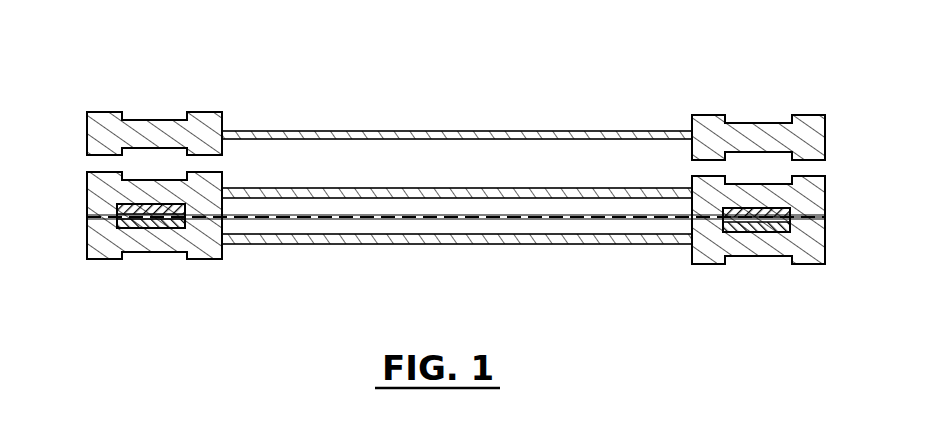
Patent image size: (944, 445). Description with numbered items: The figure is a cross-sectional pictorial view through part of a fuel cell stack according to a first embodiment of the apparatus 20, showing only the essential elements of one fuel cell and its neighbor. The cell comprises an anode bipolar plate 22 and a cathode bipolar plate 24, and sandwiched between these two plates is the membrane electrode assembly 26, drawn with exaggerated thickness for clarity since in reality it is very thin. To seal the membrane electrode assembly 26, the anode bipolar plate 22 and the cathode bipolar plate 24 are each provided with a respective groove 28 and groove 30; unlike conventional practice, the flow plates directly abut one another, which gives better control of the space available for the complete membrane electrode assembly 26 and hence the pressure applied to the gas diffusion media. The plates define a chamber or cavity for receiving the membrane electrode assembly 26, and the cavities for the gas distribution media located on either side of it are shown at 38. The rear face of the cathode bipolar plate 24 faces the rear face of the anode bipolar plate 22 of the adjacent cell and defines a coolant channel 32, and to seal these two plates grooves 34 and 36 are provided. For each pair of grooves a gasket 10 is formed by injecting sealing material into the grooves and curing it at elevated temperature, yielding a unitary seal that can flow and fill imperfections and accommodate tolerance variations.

The gasket 10 is at (172, 222).
The apparatus 20 is at (110, 281).
The anode bipolar plate 22 is at (160, 191).
The cathode bipolar plate 24 is at (88, 217).
The membrane electrode assembly 26 is at (825, 218).
The groove 28 is at (756, 232).
The groove 30 is at (762, 208).
The coolant channel 32 is at (505, 188).
The groove 34 is at (153, 163).
The groove 36 is at (132, 143).
The chambers or cavities for the gas distribution media 38 is at (297, 205).